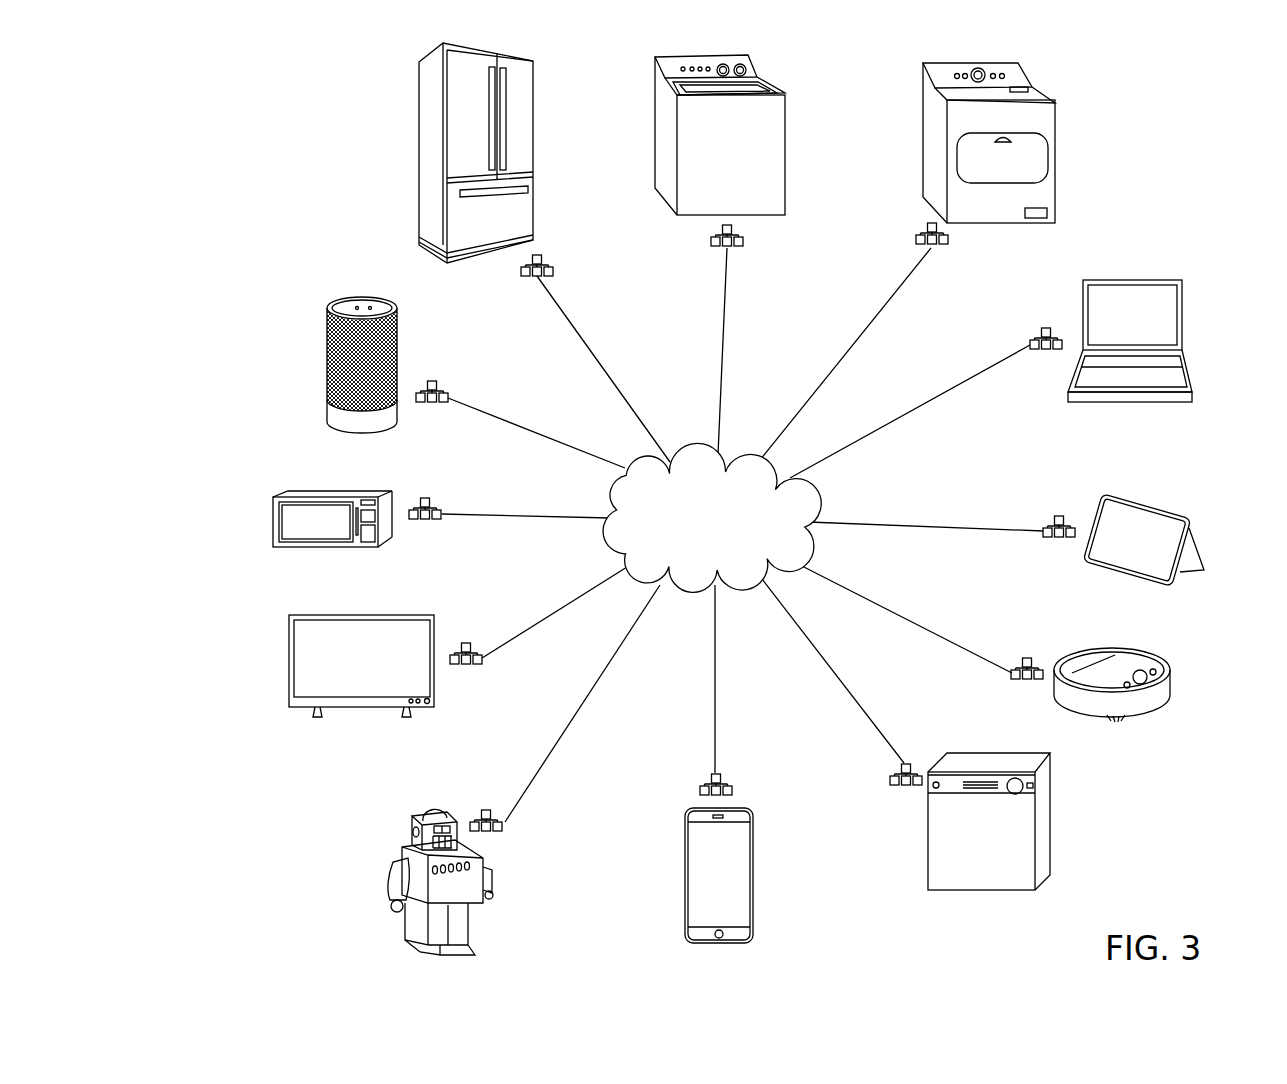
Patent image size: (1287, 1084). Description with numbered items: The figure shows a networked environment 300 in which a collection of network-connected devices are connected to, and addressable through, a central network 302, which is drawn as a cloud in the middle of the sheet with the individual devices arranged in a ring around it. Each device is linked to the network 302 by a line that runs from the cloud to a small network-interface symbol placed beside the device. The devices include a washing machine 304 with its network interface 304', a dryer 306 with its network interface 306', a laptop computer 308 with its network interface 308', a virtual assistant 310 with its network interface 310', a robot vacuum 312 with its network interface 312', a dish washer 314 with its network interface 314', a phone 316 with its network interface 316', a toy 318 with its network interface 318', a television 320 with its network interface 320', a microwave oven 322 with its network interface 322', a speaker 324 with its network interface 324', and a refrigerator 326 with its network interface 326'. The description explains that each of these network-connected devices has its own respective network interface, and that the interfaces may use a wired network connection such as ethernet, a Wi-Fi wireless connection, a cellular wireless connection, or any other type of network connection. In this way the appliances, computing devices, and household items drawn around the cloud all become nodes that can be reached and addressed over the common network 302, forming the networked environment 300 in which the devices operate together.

The networked environment 300 is at (263, 113).
The network 302 is at (693, 555).
The washing machine 304 is at (680, 135).
The network interface 304' is at (764, 240).
The dryer 306 is at (958, 143).
The network interface 306' is at (964, 240).
The laptop computer 308 is at (1162, 341).
The network interface 308' is at (1015, 323).
The virtual assistant 310 is at (1165, 532).
The network interface 310' is at (1030, 508).
The robot vacuum 312 is at (1140, 676).
The network interface 312' is at (997, 685).
The dish washer 314 is at (1027, 821).
The network interface 314' is at (882, 788).
The phone 316 is at (754, 875).
The network interface 316' is at (680, 784).
The toy 318 is at (408, 882).
The network interface 318' is at (518, 839).
The television 320 is at (326, 666).
The network interface 320' is at (496, 667).
The microwave oven 322 is at (296, 519).
The network interface 322' is at (455, 525).
The speaker 324 is at (329, 357).
The network interface 324' is at (461, 376).
The refrigerator 326 is at (445, 153).
The network interface 326' is at (575, 256).